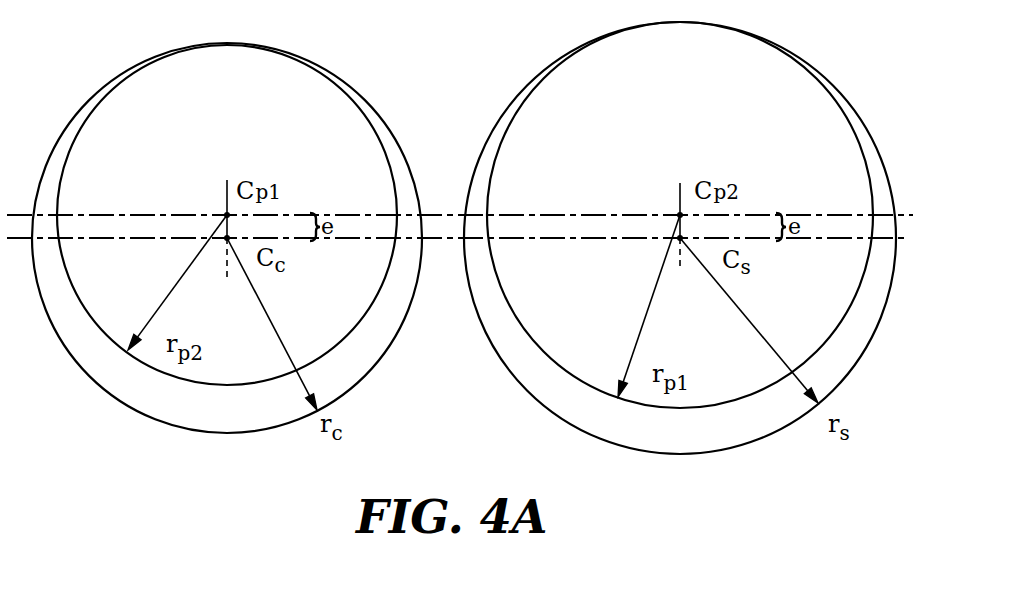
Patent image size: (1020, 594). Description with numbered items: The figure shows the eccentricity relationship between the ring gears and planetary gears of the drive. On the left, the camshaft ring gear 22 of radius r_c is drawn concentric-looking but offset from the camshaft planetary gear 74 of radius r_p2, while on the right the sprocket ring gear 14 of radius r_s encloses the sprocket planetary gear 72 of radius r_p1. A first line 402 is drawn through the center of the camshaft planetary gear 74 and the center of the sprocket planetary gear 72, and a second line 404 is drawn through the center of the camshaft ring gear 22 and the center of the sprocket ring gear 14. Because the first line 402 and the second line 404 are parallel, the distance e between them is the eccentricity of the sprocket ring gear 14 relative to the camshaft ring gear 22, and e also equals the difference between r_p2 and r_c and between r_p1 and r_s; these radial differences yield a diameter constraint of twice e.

The sprocket ring gear 14 is at (863, 357).
The camshaft ring gear 22 is at (392, 335).
The sprocket planetary gear 72 is at (843, 112).
The camshaft planetary gear 74 is at (345, 97).
The first line 402 is at (603, 216).
The second line 404 is at (595, 239).